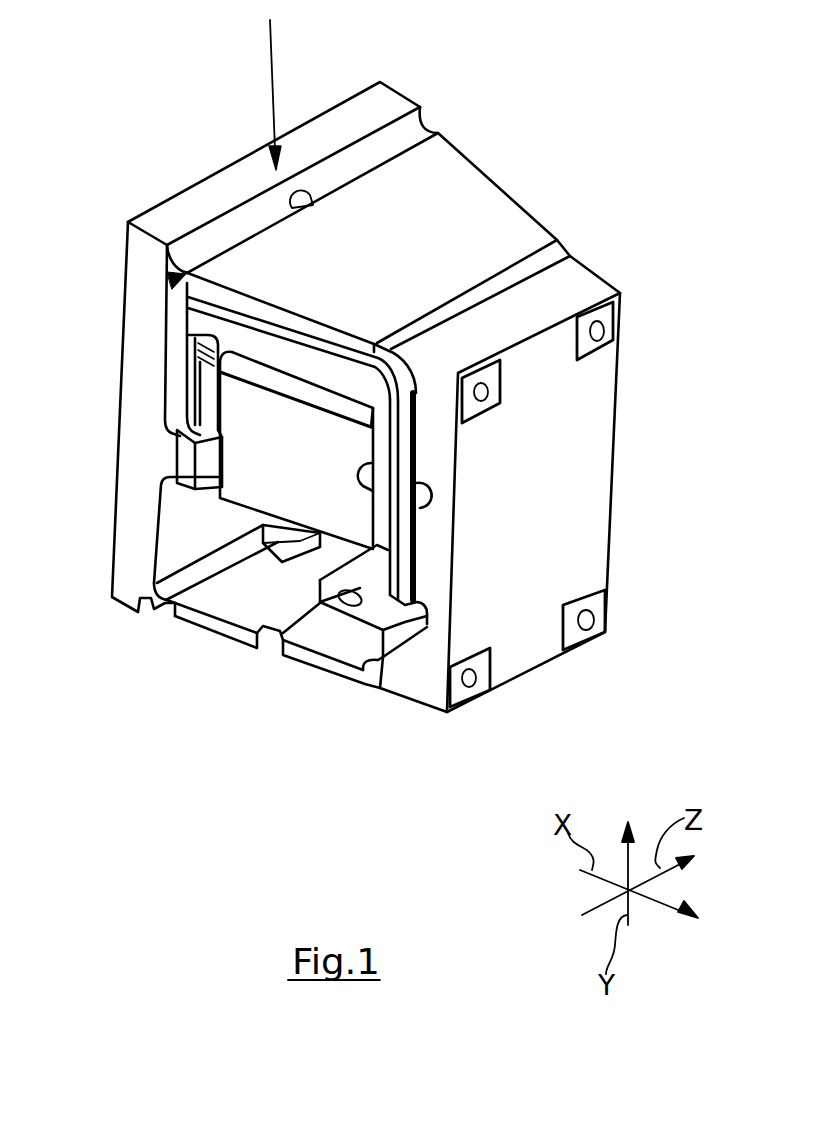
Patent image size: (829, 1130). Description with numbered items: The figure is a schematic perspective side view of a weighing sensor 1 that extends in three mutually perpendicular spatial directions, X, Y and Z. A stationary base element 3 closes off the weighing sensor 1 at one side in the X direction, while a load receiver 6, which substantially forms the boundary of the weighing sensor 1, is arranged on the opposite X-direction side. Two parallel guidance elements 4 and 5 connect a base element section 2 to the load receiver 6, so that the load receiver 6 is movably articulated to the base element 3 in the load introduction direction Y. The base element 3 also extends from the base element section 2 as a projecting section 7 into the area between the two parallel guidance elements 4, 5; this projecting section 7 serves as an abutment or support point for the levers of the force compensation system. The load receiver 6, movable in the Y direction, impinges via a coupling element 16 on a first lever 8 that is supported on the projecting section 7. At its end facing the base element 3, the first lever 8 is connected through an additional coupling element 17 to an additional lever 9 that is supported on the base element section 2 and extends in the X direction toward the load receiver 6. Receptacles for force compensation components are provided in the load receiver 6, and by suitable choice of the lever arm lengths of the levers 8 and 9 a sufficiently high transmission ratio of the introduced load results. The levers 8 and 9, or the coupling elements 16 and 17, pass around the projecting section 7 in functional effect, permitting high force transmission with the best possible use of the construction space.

The weighing sensor 1 is at (152, 782).
The base element section 2 is at (558, 476).
The stationary base element 3 is at (638, 497).
The parallel guidance element 4 is at (480, 217).
The parallel guidance element 5 is at (227, 603).
The load receiver 6 is at (137, 383).
The projecting section 7 is at (320, 477).
The first lever 8 is at (307, 358).
The additional lever 9 is at (327, 600).
The coupling element 16 is at (208, 386).
The coupling element 17 is at (400, 542).